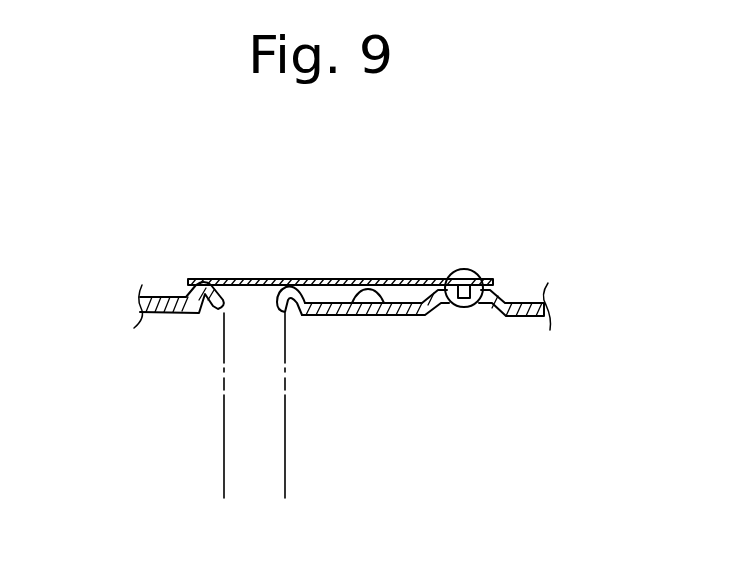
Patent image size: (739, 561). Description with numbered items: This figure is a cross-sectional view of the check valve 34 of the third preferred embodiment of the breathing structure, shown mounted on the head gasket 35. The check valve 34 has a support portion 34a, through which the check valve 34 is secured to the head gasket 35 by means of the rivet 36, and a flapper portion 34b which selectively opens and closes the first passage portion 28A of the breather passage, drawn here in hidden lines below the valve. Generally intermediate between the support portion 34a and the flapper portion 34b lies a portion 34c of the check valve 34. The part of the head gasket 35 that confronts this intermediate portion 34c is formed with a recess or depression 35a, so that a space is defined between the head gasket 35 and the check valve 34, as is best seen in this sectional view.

The first passage portion 28A is at (225, 412).
The check valve 34 is at (363, 279).
The support portion 34a is at (438, 279).
The flapper portion 34b is at (252, 278).
The intermediate portion 34c is at (338, 279).
The head gasket 35 is at (522, 302).
The recess or depression 35a is at (390, 301).
The rivet 36 is at (477, 270).